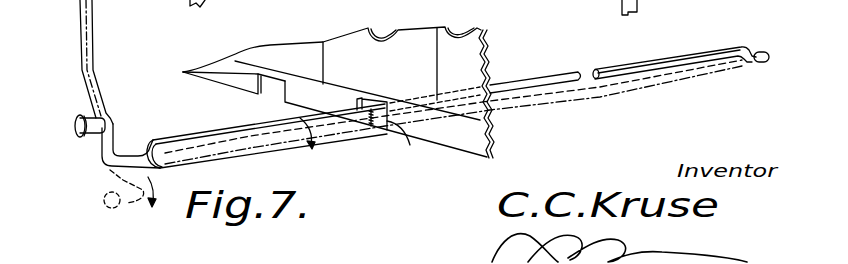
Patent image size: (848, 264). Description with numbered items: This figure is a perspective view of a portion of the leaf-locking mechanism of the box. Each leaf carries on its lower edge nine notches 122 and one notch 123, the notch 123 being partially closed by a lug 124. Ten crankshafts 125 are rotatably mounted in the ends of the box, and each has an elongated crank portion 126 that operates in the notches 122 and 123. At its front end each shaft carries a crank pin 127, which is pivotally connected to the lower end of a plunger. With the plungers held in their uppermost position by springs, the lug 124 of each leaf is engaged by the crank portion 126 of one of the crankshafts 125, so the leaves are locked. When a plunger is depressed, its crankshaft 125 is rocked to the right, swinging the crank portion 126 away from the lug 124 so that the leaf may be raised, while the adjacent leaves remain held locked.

The notches 122 is at (275, 82).
The notch 123 is at (404, 131).
The lug 124 is at (368, 122).
The crankshafts 125 is at (764, 62).
The elongated crank portions 126 is at (692, 55).
The crank pin 127 is at (88, 115).